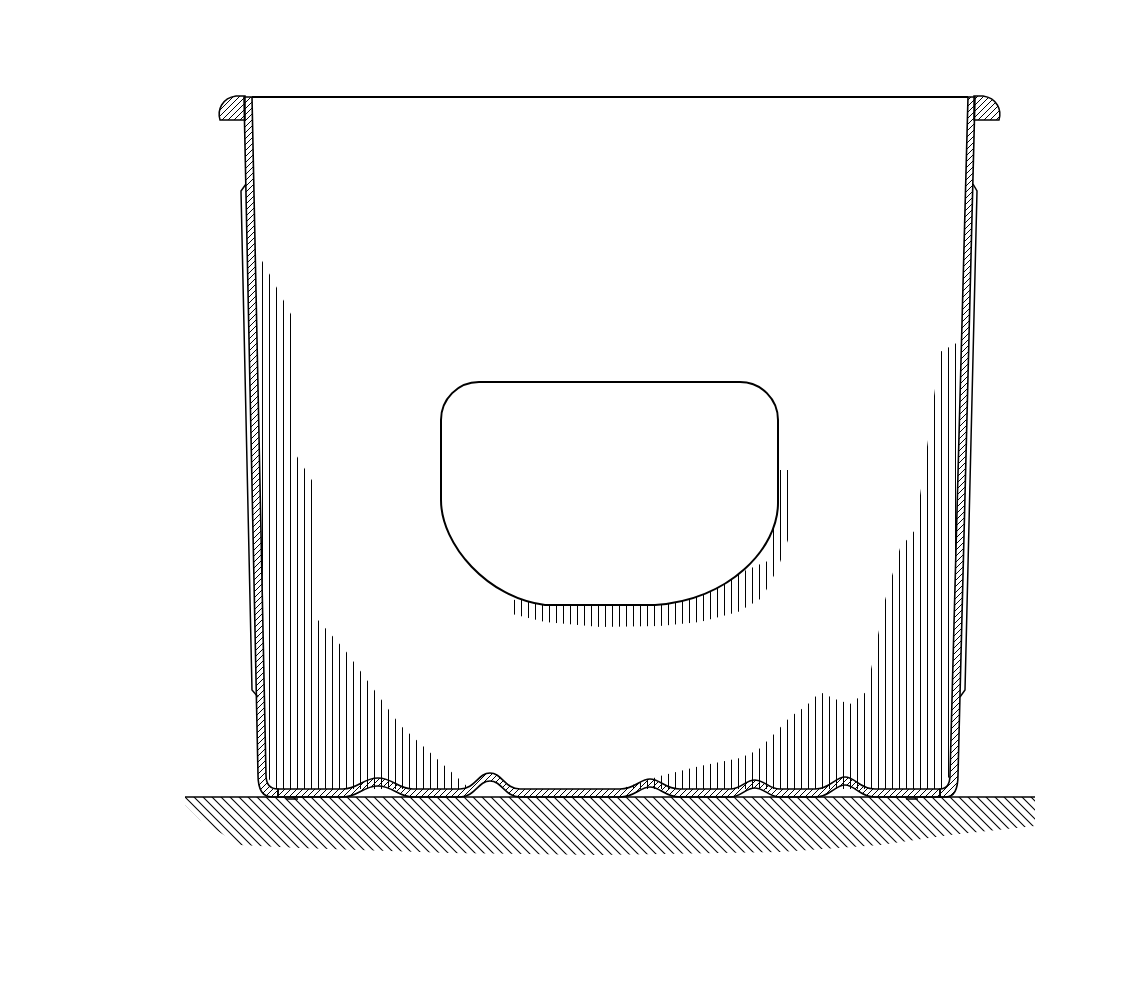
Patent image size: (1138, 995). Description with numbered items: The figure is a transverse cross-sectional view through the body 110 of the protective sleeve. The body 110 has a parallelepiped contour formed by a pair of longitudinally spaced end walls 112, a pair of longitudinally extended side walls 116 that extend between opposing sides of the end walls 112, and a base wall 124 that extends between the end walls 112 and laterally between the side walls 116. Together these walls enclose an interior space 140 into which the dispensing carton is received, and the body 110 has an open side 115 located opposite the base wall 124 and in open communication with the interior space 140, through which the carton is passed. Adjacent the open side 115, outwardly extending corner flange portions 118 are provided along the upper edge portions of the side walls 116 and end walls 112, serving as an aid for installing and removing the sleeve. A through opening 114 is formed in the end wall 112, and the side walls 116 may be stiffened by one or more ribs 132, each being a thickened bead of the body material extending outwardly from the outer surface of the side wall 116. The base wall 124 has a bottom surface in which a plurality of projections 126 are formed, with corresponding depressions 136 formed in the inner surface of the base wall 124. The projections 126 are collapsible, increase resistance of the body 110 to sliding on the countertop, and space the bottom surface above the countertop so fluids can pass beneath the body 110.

The body 110 is at (412, 95).
The open side 115 is at (562, 97).
The end wall 112 is at (717, 140).
The interior space 140 is at (822, 152).
The corner flange portion 118 is at (227, 102).
The side wall 116 is at (243, 158).
The rib 132 is at (243, 240).
The through opening 114 is at (575, 385).
The depression 136 is at (790, 787).
The base wall 124 is at (493, 787).
The projection 126 is at (292, 800).